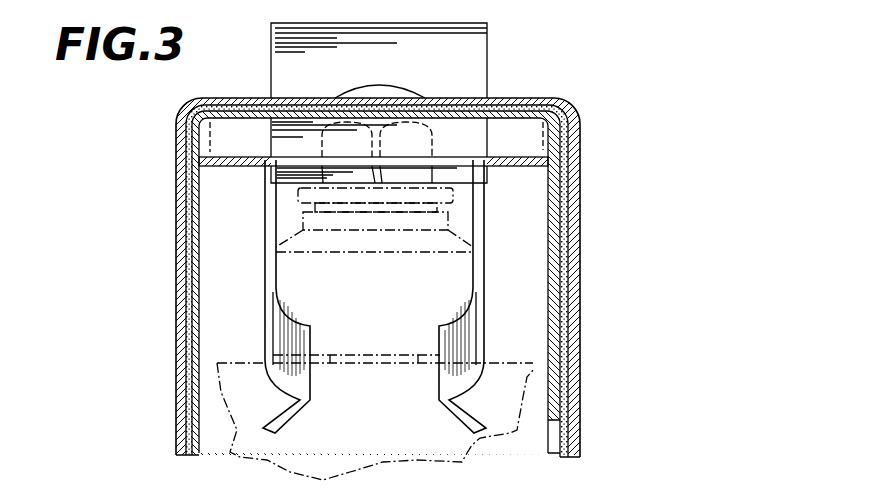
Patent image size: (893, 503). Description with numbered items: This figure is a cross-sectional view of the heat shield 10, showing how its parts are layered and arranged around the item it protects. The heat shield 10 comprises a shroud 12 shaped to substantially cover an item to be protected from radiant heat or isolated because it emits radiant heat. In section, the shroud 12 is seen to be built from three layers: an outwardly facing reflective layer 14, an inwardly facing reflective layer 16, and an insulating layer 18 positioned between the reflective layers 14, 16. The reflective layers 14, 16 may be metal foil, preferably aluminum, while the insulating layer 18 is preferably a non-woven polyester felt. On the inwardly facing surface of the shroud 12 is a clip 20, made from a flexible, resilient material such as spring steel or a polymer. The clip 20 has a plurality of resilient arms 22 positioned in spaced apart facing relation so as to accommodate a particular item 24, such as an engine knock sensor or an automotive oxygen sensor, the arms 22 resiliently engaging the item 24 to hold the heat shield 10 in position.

The heat shield 10 is at (750, 113).
The shroud 12 is at (515, 98).
The outwardly facing reflective layer 14 is at (580, 330).
The inwardly facing reflective layer 16 is at (563, 363).
The insulating layer 18 is at (563, 412).
The clip 20 is at (522, 156).
The resilient arms 22 is at (200, 303).
The item 24 is at (400, 304).